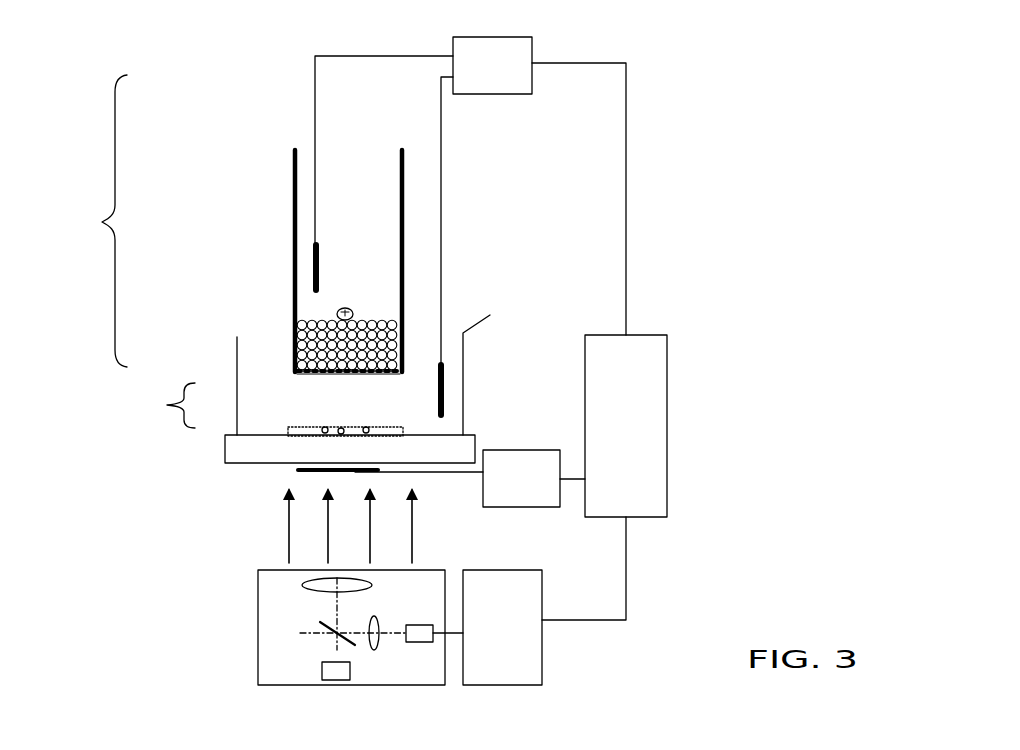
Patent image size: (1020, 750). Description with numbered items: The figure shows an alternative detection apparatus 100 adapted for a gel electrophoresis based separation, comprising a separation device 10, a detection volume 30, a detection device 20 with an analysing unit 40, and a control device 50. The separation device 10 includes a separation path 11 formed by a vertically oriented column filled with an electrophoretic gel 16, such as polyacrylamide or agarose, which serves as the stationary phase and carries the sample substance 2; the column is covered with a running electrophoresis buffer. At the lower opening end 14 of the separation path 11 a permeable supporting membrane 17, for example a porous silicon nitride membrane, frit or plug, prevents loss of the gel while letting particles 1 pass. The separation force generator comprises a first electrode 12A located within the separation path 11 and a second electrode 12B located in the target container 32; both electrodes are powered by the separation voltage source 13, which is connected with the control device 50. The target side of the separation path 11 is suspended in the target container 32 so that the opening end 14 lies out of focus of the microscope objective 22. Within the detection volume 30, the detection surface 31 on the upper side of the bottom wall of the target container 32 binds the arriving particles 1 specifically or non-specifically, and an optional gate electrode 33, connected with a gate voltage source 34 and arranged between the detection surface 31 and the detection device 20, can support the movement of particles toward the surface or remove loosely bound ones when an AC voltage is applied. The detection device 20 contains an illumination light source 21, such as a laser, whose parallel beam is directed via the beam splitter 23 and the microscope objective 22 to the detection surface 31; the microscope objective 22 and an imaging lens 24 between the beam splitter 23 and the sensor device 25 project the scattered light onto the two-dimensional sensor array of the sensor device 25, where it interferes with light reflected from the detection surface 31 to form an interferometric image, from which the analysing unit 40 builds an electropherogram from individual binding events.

The detection apparatus 100 is at (195, 77).
The separation device 10 is at (88, 231).
The detection volume 30 is at (155, 419).
The separation voltage source 13 is at (492, 65).
The control device 50 is at (660, 512).
The gate voltage source 34 is at (534, 478).
The analysing unit 40 is at (538, 680).
The detection device 20 is at (297, 680).
The separation path 11 is at (404, 220).
The first electrode 12A is at (315, 256).
The second electrode 12B is at (441, 388).
The electrophoretic gel 16 is at (380, 337).
The sample substance 2 is at (358, 310).
The opening end 14 is at (300, 368).
The permeable supporting membrane 17 is at (337, 373).
The particles 1 is at (341, 432).
The target container 32 is at (463, 421).
The detection surface 31 is at (270, 435).
The gate electrode 33 is at (357, 472).
The microscope objective 22 is at (313, 583).
The illumination light source 21 is at (340, 668).
The beam splitter 23 is at (353, 643).
The imaging lens 24 is at (380, 637).
The sensor device 25 is at (418, 633).